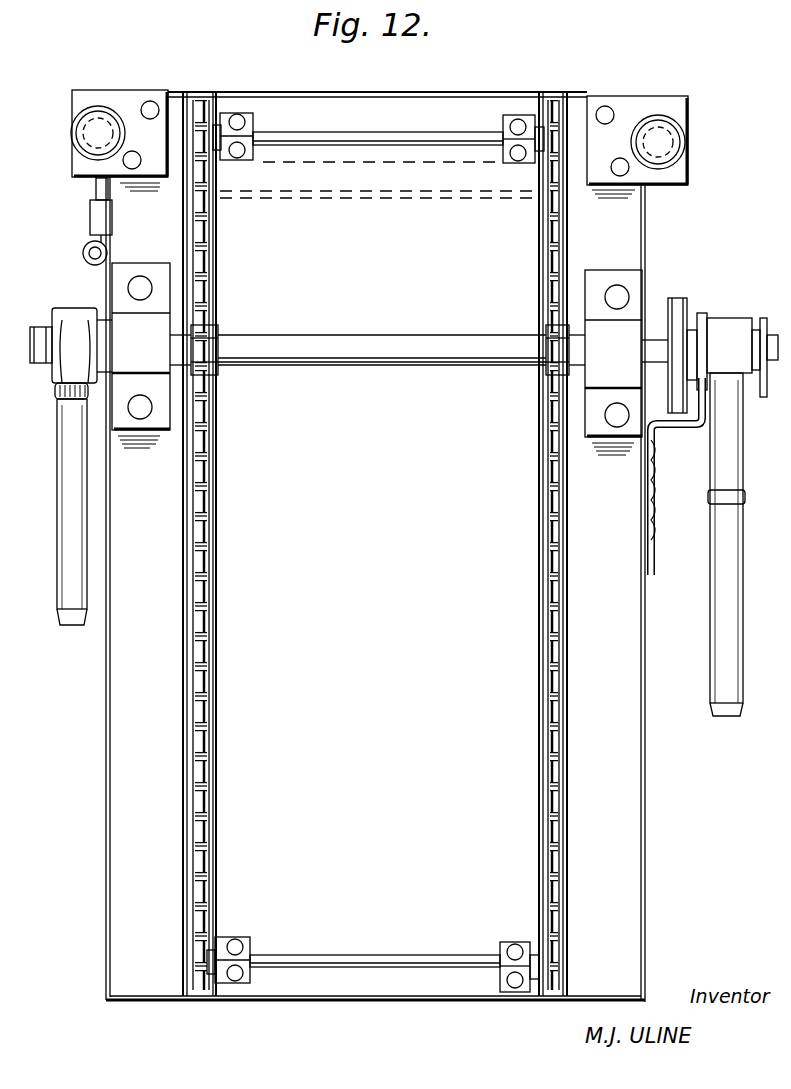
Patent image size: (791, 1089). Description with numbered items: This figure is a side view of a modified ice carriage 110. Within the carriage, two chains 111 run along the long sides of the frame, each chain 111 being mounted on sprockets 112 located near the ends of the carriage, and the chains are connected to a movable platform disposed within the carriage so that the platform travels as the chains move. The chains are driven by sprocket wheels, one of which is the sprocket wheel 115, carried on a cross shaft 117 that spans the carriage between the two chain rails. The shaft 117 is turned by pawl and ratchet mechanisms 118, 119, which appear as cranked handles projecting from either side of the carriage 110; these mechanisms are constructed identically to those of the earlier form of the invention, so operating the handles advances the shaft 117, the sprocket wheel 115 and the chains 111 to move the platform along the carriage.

The ice carriage 110 is at (379, 546).
The chains 111 is at (198, 508).
The sprockets 112 is at (197, 977).
The sprocket wheel 115 is at (213, 328).
The shaft 117 is at (330, 353).
The pawl and ratchet mechanism 118 is at (76, 310).
The pawl and ratchet mechanism 119 is at (727, 322).